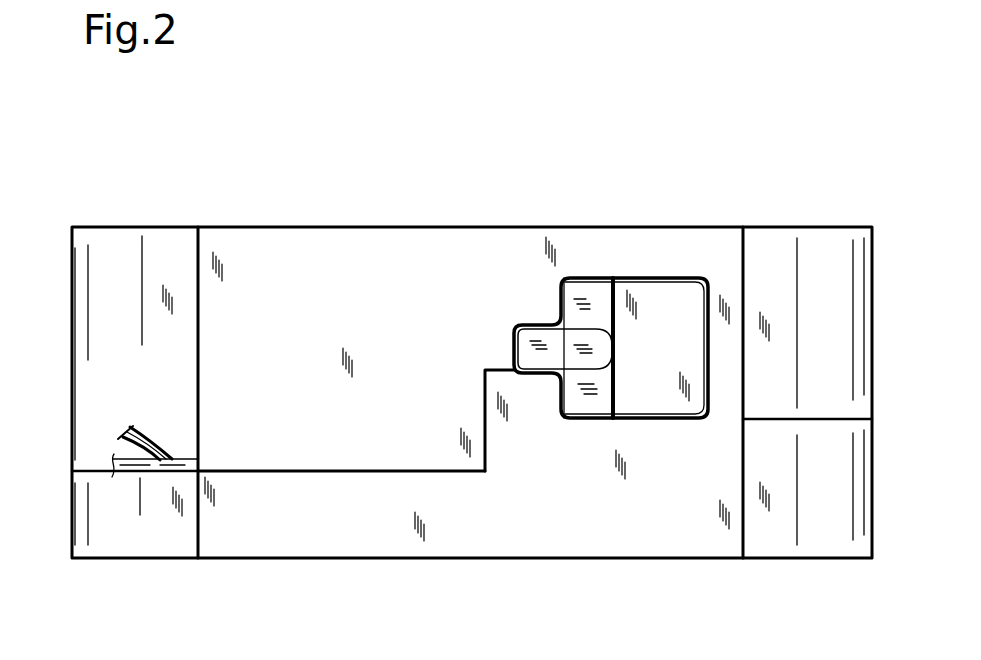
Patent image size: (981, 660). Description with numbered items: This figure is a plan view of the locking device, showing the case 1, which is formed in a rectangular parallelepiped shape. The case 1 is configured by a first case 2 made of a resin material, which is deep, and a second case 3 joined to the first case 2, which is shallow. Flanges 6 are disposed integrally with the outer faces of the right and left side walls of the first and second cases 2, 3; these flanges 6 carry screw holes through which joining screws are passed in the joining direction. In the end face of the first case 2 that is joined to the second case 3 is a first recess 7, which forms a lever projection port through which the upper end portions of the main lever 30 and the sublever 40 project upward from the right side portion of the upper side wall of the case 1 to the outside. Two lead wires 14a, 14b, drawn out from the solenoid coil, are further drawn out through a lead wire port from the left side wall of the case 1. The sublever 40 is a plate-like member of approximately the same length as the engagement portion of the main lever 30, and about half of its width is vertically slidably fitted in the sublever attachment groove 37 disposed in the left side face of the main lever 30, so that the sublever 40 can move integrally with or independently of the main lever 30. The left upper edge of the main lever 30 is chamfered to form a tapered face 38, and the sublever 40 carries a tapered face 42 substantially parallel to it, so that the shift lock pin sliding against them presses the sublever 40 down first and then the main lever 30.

The case 1 is at (567, 219).
The first case 2 is at (345, 243).
The second case 3 is at (340, 537).
The flanges 6 is at (72, 355).
The first recess 7 is at (684, 284).
The lead wire 14a is at (163, 465).
The lead wire 14b is at (150, 436).
The main lever 30 is at (672, 392).
The sublever attachment groove 37 is at (609, 342).
The tapered face 38 is at (598, 292).
The sublever 40 is at (585, 339).
The tapered face 42 is at (537, 358).